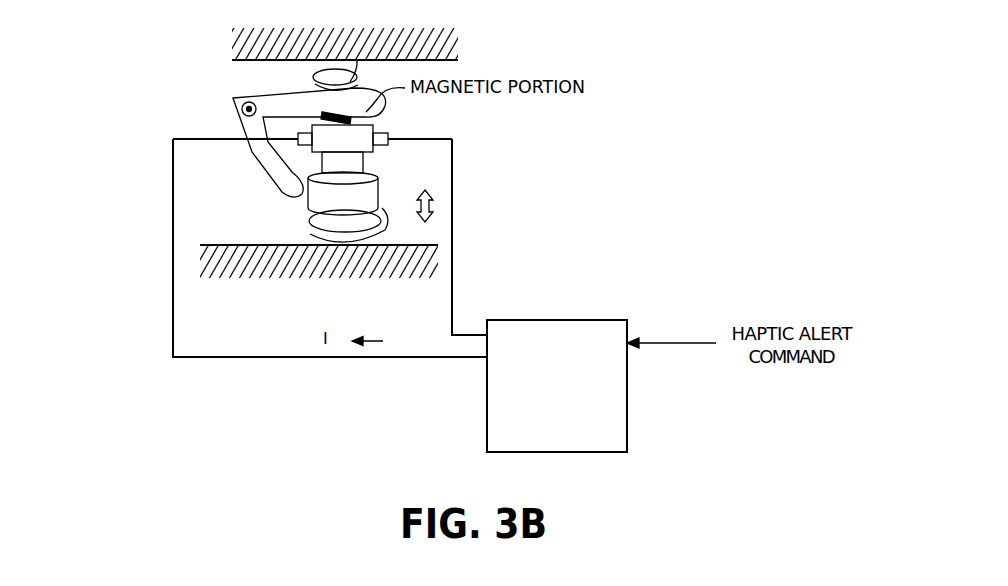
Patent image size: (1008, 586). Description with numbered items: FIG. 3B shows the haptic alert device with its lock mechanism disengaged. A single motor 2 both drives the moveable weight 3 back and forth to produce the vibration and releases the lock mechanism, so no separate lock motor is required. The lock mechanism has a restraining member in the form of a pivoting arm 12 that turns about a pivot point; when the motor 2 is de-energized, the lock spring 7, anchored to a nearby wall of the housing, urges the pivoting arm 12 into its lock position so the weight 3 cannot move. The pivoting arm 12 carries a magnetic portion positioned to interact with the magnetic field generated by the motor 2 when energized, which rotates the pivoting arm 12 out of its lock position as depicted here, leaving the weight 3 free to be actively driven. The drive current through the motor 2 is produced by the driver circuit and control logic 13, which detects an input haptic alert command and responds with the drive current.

The lock spring 7 is at (314, 76).
The pivoting arm 12 is at (243, 93).
The motor 2 is at (390, 120).
The moveable weight 3 is at (378, 184).
The driver circuit and control logic 13 is at (627, 403).